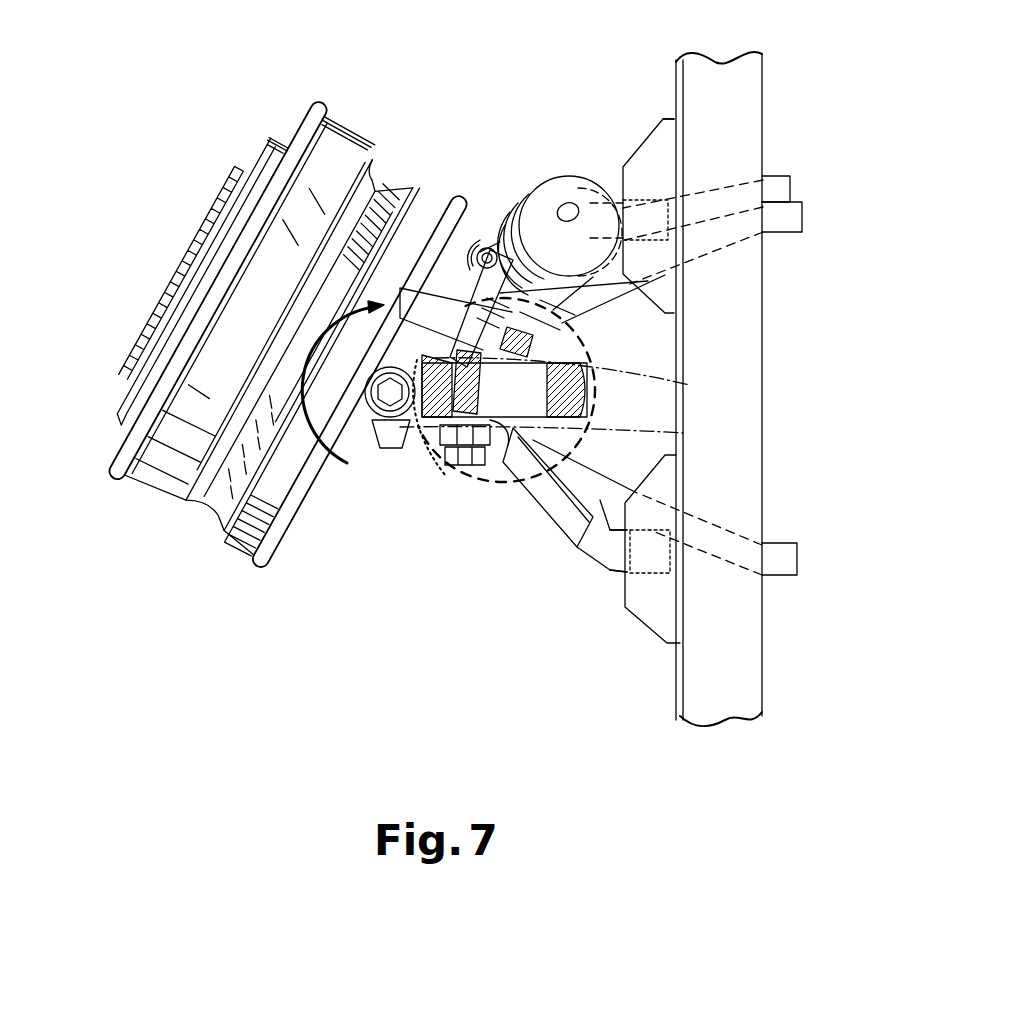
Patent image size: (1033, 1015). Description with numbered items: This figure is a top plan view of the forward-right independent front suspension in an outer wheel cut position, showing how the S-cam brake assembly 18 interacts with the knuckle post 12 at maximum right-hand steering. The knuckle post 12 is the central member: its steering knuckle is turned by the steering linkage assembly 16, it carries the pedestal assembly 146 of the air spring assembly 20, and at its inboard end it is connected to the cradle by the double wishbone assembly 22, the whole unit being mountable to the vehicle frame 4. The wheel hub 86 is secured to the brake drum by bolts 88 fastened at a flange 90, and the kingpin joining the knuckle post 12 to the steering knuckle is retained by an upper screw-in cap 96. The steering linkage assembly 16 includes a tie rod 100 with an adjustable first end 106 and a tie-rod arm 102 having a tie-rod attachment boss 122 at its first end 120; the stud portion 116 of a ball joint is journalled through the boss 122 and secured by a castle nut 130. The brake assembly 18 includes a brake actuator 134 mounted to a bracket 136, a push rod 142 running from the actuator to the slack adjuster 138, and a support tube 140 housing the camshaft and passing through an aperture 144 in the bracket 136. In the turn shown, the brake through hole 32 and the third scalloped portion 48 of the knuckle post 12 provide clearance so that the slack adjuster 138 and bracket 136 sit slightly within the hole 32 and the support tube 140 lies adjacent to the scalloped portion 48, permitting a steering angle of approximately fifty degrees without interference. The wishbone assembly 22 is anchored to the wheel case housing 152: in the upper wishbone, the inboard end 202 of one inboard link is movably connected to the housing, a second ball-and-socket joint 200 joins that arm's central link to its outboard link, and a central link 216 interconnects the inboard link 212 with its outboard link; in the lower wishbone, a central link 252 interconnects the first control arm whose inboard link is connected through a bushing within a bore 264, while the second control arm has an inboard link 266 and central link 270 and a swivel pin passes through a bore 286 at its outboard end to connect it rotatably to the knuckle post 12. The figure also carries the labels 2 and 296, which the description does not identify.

The wheel assembly 2 is at (310, 587).
The vehicle frame 4 is at (763, 308).
The knuckle post 12 is at (589, 400).
The steering linkage assembly 16 is at (482, 250).
The S-cam brake assembly 18 is at (593, 192).
The air spring assembly 20 is at (562, 447).
The double wishbone assembly 22 is at (497, 534).
The brake through hole 32 is at (512, 407).
The third scalloped portion 48 is at (425, 342).
The wheel hub 86 is at (128, 412).
The bolts 88 is at (175, 283).
The flange 90 is at (172, 345).
The upper screw-in cap 96 is at (393, 402).
The tie rod 100 is at (707, 192).
The tie-rod arm 102 is at (432, 290).
The first end 106 is at (778, 176).
The stud portion 116 is at (489, 248).
The first end 120 is at (503, 257).
The tie-rod attachment boss 122 is at (508, 262).
The castle nut 130 is at (662, 388).
The brake actuator 134 is at (580, 180).
The bracket 136 is at (627, 277).
The slack adjuster 138 is at (480, 483).
The support tube 140 is at (420, 303).
The push rod 142 is at (665, 313).
The aperture 144 is at (452, 355).
The pedestal assembly 146 is at (683, 433).
The wheel case housing 152 is at (668, 118).
The second ball-and-socket joint 200 is at (660, 608).
The inboard end 202 is at (643, 200).
The inboard link 212 is at (613, 560).
The central link 216 is at (530, 520).
The central link 252 is at (543, 290).
The bore 264 is at (803, 212).
The inboard link 266 is at (780, 543).
The central link 270 is at (603, 500).
The bore 286 is at (433, 457).
The link arm 296 is at (567, 317).